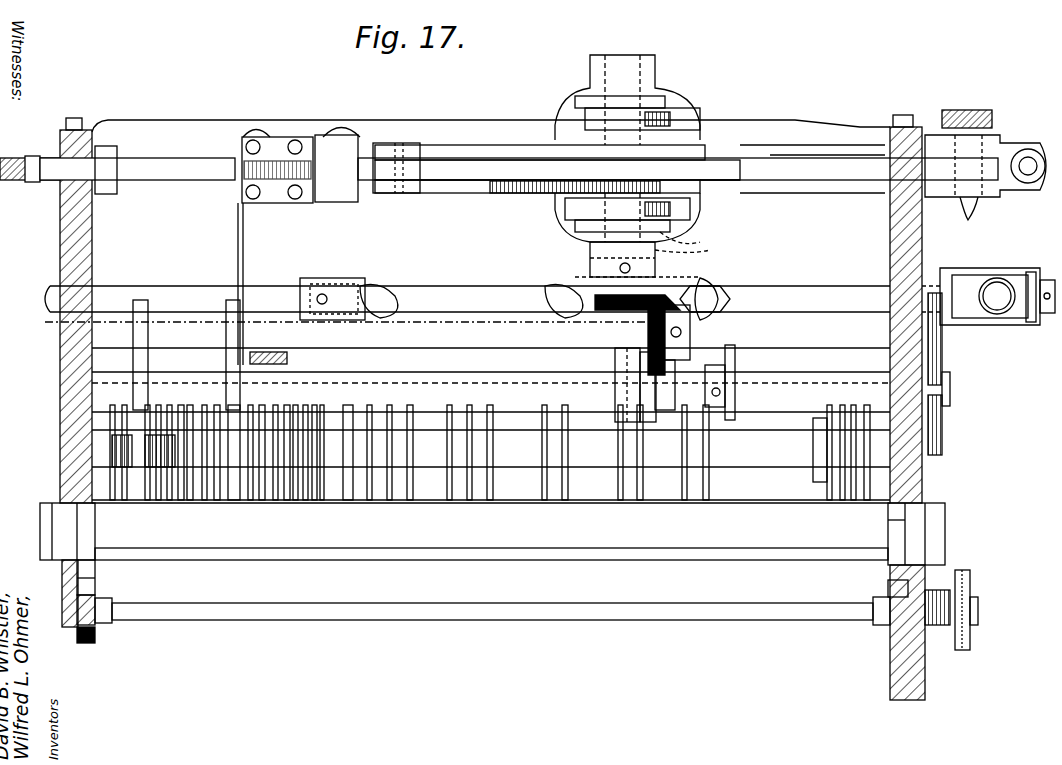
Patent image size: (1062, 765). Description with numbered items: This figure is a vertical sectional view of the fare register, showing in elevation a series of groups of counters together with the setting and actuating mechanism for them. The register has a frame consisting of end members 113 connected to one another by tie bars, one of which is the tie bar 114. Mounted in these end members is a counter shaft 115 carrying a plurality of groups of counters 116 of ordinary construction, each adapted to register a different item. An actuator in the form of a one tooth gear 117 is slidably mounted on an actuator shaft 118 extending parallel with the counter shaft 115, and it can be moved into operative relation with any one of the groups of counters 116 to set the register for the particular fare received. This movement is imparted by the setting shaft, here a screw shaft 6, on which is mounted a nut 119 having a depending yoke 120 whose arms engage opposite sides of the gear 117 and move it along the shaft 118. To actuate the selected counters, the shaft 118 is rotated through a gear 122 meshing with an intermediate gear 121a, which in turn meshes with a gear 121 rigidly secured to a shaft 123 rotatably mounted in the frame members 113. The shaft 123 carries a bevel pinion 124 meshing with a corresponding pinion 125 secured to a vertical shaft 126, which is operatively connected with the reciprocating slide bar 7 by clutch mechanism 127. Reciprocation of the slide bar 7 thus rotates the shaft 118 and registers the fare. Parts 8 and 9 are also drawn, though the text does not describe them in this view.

The setting shaft 6 is at (815, 290).
The slide bar 7 is at (808, 137).
The bracket 8 is at (1036, 268).
The hook member 9 is at (1026, 148).
The end members 113 is at (92, 266).
The tie bar 114 is at (370, 124).
The counter shaft 115 is at (795, 465).
The groups of counters 116 is at (398, 500).
The one tooth gear 117 is at (632, 392).
The actuator shaft 118 is at (440, 375).
The nut 119 is at (690, 260).
The yoke 120 is at (676, 382).
The gear 121 is at (942, 347).
The intermediate gear 121a is at (948, 378).
The gear 122 is at (942, 440).
The shaft 123 is at (780, 340).
The bevel pinion 124 is at (690, 347).
The pinion 125 is at (590, 268).
The vertical shaft 126 is at (695, 246).
The clutch mechanism 127 is at (613, 122).